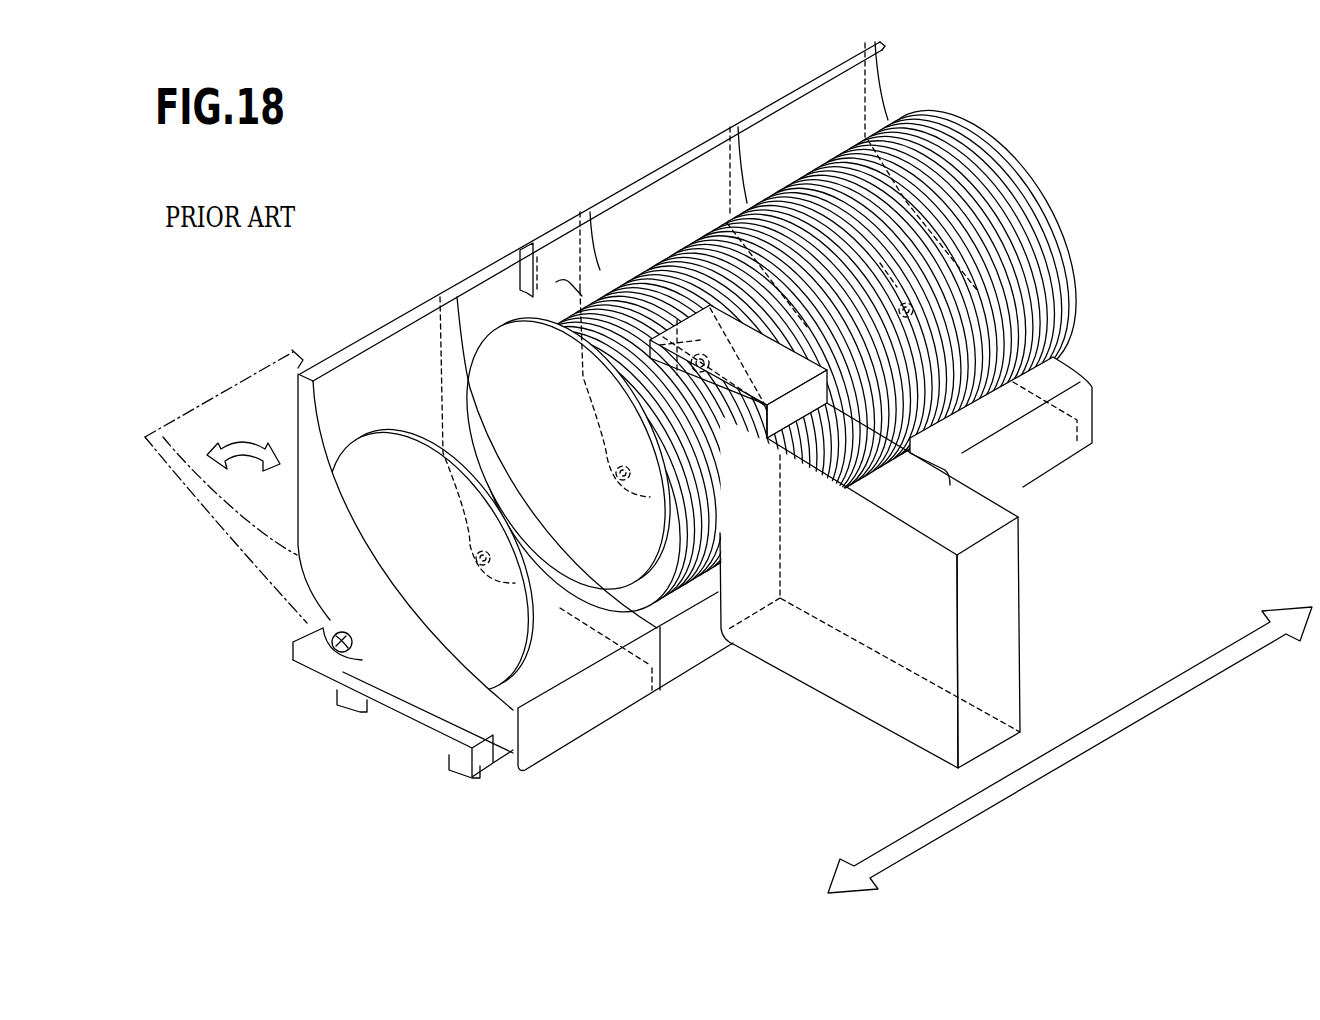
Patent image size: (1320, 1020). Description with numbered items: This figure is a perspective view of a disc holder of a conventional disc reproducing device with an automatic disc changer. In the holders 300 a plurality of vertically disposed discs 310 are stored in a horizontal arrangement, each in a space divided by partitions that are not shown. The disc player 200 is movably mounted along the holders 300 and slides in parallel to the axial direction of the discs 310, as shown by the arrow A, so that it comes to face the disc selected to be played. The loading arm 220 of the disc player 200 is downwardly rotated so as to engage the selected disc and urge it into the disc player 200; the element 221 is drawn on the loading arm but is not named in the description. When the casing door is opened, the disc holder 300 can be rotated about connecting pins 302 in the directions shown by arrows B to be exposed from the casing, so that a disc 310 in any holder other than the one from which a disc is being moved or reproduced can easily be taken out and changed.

The disc player 200 is at (1028, 543).
The disc loading arm 220 is at (560, 275).
The clamp member 221 is at (693, 372).
The disc holder 300 is at (790, 92).
The connecting pin 302 is at (293, 647).
The disc 310 is at (1038, 203).
The arrow A is at (1033, 777).
The arrow B is at (208, 450).